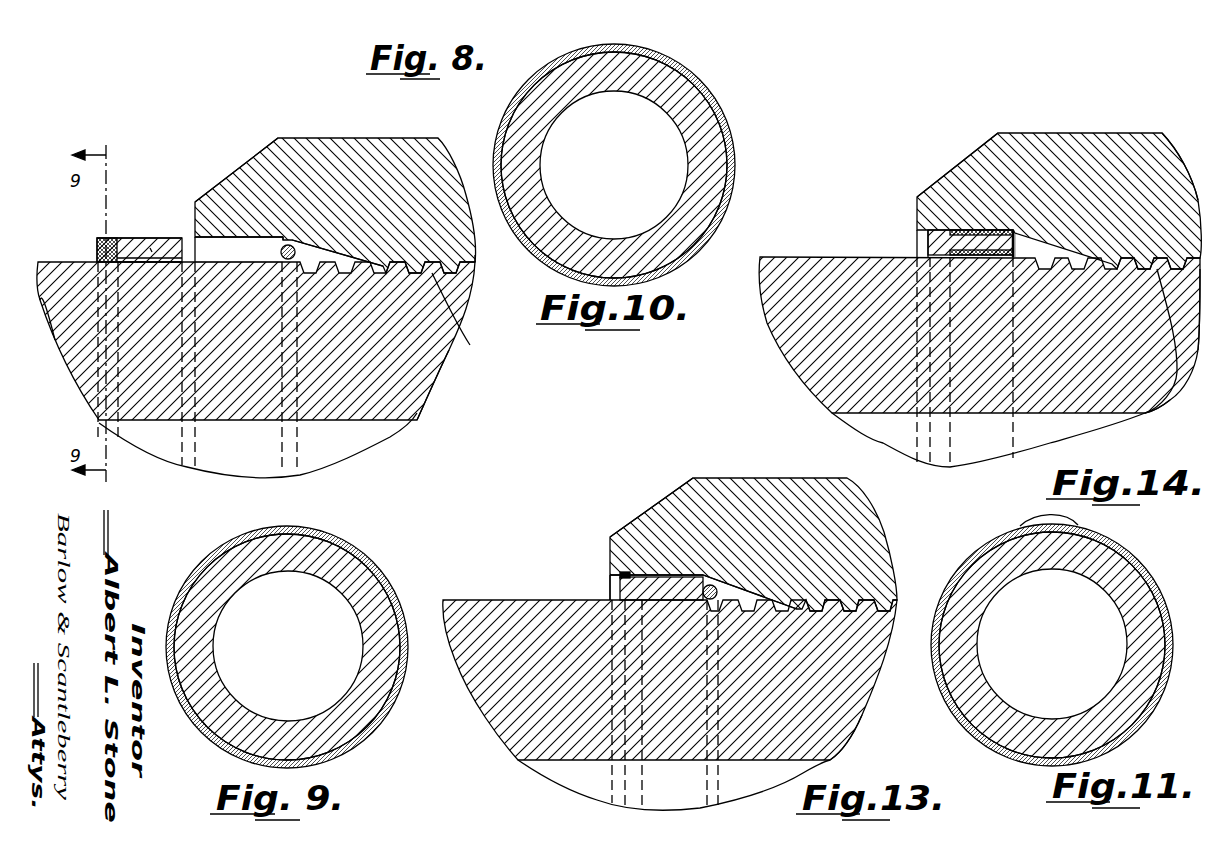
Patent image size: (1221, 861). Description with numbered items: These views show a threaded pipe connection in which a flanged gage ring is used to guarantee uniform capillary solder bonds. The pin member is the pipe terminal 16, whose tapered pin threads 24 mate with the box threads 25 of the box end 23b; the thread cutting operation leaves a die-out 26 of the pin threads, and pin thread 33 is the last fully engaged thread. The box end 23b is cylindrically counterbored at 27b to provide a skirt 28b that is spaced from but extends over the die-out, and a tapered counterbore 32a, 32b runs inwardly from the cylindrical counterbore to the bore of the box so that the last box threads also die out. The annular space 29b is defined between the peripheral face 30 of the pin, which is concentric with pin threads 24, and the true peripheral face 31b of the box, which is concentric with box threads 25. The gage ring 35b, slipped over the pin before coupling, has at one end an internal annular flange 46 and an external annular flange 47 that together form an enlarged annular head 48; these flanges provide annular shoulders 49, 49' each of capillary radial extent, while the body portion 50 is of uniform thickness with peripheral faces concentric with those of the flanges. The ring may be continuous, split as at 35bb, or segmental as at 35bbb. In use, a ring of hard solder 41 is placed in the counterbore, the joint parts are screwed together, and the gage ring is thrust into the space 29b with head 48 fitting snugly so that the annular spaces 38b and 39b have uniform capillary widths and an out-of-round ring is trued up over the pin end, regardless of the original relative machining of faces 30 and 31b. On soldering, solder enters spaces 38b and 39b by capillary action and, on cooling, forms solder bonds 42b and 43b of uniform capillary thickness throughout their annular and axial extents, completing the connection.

In FIG. 8, the pipe terminal 16 is at (350, 400).
In FIG. 10, the pipe terminal 16 is at (542, 212).
In FIG. 9, the pipe terminal 16 is at (225, 710).
In FIG. 11, the pipe terminal 16 is at (985, 700).
In FIG. 14, the pipe terminal 16 is at (1063, 393).
In FIG. 13, the pipe terminal 16 is at (750, 737).
In FIG. 8, the box end 23b is at (394, 158).
In FIG. 14, the box end 23b is at (1130, 148).
In FIG. 13, the box end 23b is at (855, 540).
In FIG. 8, the pin threads 24 is at (478, 316).
In FIG. 14, the pin threads 24 is at (1197, 270).
In FIG. 8, the box threads 25 is at (483, 256).
In FIG. 14, the box threads 25 is at (1167, 263).
In FIG. 14, the die-out of pin threads 26 is at (1017, 268).
In FIG. 8, the counterbore 27b is at (255, 236).
In FIG. 8, the skirt 28b is at (220, 198).
In FIG. 14, the skirt 28b is at (972, 167).
In FIG. 13, the skirt 28b is at (663, 512).
In FIG. 8, the space 29b is at (242, 246).
In FIG. 14, the space 29b is at (917, 237).
In FIG. 8, the peripheral face 30 is at (232, 266).
In FIG. 13, the peripheral face 30 is at (690, 600).
In FIG. 8, the peripheral face 31b is at (210, 242).
In FIG. 13, the peripheral face 31b is at (608, 583).
In FIG. 8, the tapered counterbore 32a is at (320, 248).
In FIG. 13, the tapered counterbore 32b is at (733, 593).
In FIG. 8, the pin thread 33 is at (461, 364).
In FIG. 14, the pin thread 33 is at (1178, 378).
In FIG. 13, the pin thread 33 is at (847, 618).
In FIG. 8, the gage ring 35b is at (133, 238).
In FIG. 9, the gage ring 35b is at (238, 540).
In FIG. 14, the gage ring 35b is at (990, 241).
In FIG. 13, the gage ring 35b is at (622, 617).
In FIG. 10, the split gage ring 35bb is at (665, 57).
In FIG. 11, the segmental gage ring 35bbb is at (1045, 526).
In FIG. 13, the annular space 38b is at (690, 555).
In FIG. 13, the annular space 39b is at (650, 607).
In FIG. 8, the ring of hard solder 41 is at (290, 244).
In FIG. 13, the ring of hard solder 41 is at (710, 584).
In FIG. 14, the solder bond 42b is at (990, 232).
In FIG. 14, the solder bond 43b is at (955, 256).
In FIG. 8, the internal annular flange 46 is at (63, 333).
In FIG. 8, the external annular flange 47 is at (97, 240).
In FIG. 8, the annular head 48 is at (96, 252).
In FIG. 13, the annular head 48 is at (621, 572).
In FIG. 8, the annular shoulder 49 is at (149, 206).
In FIG. 8, the annular shoulder 49' is at (149, 287).
In FIG. 8, the body portion 50 is at (150, 250).